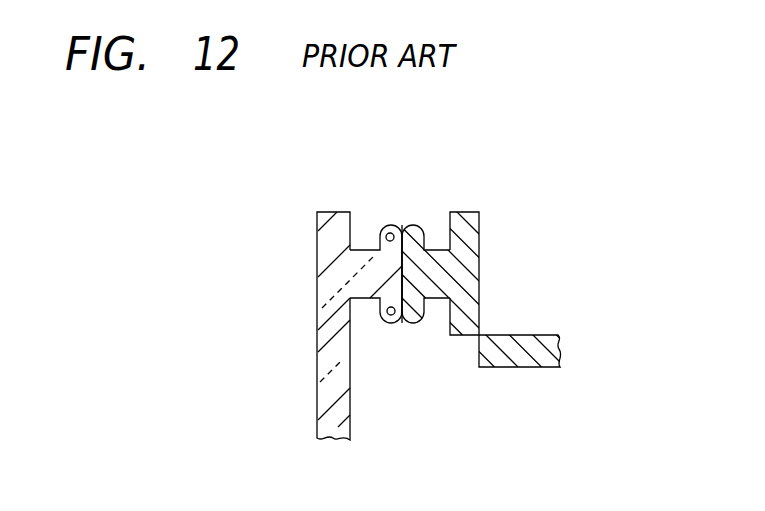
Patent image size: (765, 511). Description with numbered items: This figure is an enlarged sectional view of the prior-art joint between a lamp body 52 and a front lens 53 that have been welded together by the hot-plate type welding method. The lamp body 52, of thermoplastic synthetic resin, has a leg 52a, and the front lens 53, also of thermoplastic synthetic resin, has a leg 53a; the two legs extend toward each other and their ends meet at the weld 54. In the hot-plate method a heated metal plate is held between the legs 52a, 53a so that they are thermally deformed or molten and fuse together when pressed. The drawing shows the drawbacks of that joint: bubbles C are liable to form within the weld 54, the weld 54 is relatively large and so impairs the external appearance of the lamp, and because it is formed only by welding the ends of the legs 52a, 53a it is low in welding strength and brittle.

The lamp body 52 is at (452, 305).
The leg of the lamp body 52a is at (437, 299).
The front lens 53 is at (328, 294).
The leg of the front lens 53a is at (363, 250).
The weld 54 is at (429, 191).
The bubbles C is at (390, 232).